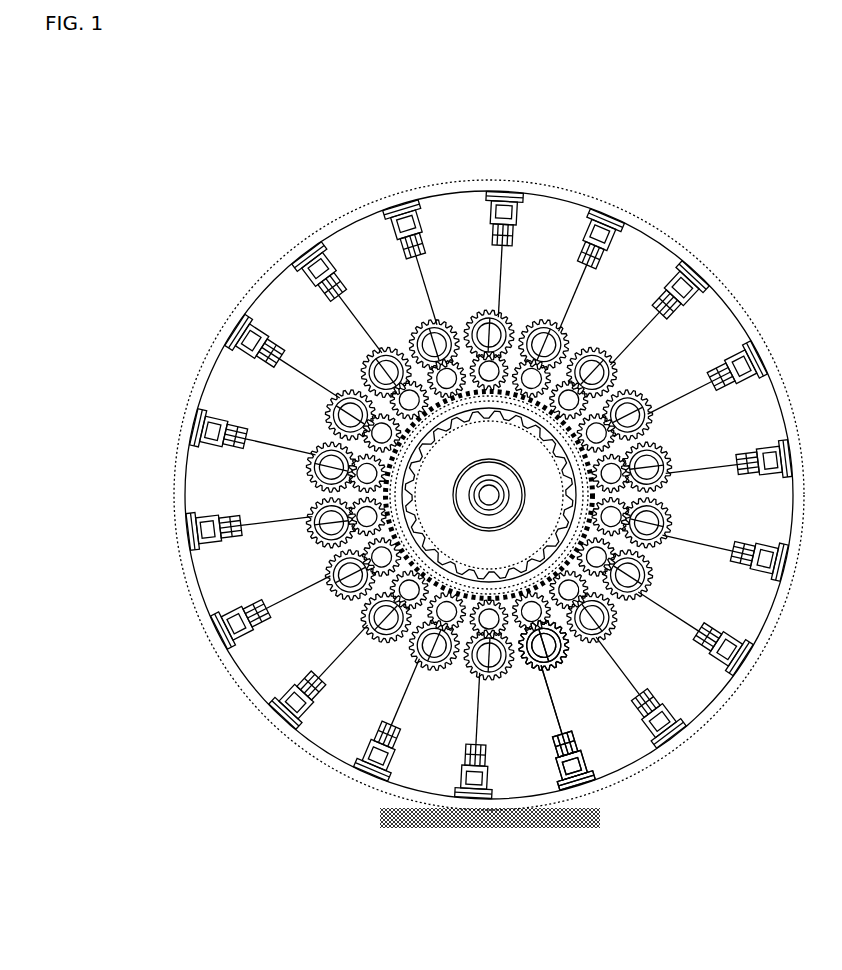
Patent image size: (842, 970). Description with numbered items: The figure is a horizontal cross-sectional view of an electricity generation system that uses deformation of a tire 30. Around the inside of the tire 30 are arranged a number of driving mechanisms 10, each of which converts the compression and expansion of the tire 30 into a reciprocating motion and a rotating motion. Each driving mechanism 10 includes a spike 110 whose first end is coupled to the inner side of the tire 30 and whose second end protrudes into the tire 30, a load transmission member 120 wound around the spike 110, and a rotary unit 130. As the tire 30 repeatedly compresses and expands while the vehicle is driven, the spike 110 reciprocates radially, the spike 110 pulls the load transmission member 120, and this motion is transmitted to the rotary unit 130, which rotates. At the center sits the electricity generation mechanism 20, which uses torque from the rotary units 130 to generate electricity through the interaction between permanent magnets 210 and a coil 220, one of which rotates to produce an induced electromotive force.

The driving mechanism 10 is at (712, 757).
The spike 110 is at (618, 779).
The load transmission member 120 is at (614, 717).
The rotary unit 130 is at (607, 698).
The electricity generation mechanism 20 is at (537, 355).
The permanent magnets 210 is at (530, 334).
The coil 220 is at (538, 376).
The tire 30 is at (480, 190).